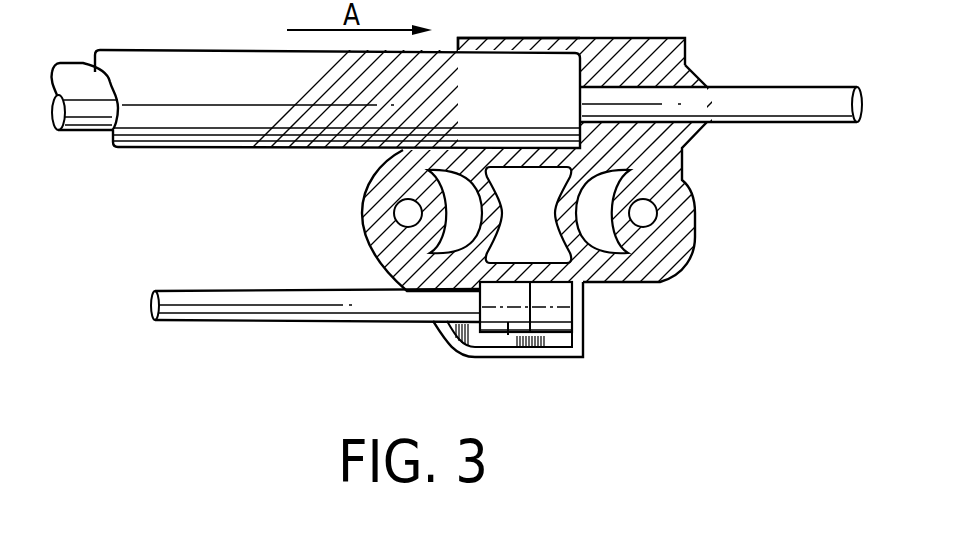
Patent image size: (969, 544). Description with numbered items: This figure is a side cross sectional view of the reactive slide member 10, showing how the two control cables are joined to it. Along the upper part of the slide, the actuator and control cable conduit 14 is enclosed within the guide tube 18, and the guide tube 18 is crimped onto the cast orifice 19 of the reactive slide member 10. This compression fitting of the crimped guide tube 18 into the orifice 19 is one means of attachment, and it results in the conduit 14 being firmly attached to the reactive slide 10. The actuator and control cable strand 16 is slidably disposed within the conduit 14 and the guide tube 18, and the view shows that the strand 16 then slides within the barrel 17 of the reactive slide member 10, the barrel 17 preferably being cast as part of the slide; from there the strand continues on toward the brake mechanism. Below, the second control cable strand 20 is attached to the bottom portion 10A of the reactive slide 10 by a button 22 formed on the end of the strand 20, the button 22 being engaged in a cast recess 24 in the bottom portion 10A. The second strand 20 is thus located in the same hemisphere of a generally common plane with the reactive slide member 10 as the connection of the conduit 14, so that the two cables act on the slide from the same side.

The reactive slide member 10 is at (580, 37).
The bottom portion 10A is at (452, 328).
The actuator and control cable conduit 14 is at (83, 63).
The actuator and control cable strand 16 is at (797, 87).
The barrel 17 is at (707, 86).
The guide tube 18 is at (223, 50).
The cast orifice 19 is at (510, 37).
The second control cable strand 20 is at (297, 323).
The button 22 is at (562, 303).
The cast recess 24 is at (508, 335).